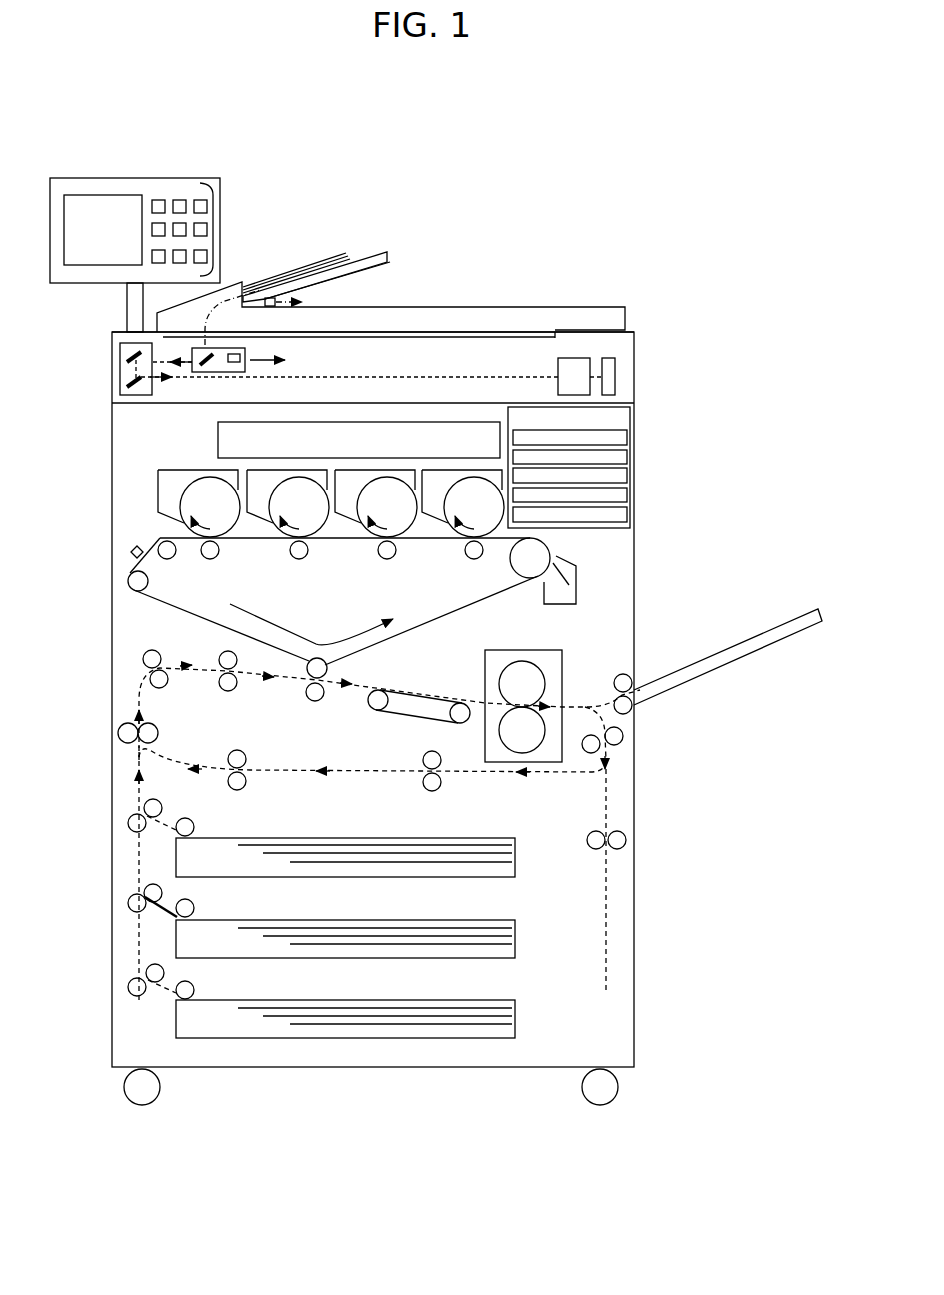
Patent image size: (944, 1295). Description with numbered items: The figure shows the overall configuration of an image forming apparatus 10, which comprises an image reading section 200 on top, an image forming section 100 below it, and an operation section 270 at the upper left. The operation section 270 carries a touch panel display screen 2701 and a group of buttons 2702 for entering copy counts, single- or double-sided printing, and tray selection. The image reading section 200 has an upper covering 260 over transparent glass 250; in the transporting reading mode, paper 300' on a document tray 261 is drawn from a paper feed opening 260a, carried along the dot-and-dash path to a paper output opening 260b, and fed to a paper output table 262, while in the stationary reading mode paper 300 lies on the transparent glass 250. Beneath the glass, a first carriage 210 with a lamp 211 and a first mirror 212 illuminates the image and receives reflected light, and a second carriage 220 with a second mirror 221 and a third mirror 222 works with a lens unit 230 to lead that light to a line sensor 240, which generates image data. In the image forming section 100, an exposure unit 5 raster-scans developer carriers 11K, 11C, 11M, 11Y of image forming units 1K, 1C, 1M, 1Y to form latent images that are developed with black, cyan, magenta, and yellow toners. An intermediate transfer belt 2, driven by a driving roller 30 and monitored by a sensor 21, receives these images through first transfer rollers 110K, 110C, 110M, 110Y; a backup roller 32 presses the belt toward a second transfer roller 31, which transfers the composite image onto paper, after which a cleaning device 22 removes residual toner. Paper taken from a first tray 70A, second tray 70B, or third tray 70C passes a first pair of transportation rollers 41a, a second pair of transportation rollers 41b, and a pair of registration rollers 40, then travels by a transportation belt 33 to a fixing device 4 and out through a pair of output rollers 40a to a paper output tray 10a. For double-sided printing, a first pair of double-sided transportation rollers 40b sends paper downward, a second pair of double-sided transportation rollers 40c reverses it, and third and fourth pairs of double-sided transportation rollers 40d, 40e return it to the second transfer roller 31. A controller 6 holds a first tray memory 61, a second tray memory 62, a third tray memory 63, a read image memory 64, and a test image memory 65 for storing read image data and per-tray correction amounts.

The image forming apparatus 10 is at (345, 158).
The image forming section 100 is at (730, 489).
The image reading section 200 is at (386, 302).
The operation section 270 is at (176, 222).
The touch panel display screen 2701 is at (82, 195).
The group of buttons 2702 is at (213, 230).
The upper covering 260 is at (548, 305).
The paper feed opening 260a is at (258, 285).
The paper output opening 260b is at (300, 298).
The document tray 261 is at (395, 255).
The paper output table 262 is at (508, 316).
The paper 300 is at (488, 262).
The paper 300' is at (397, 223).
The transparent glass 250 is at (540, 342).
The second carriage 220 is at (87, 364).
The second mirror 221 is at (128, 356).
The third mirror 222 is at (128, 383).
The first carriage 210 is at (249, 369).
The lamp 211 is at (240, 363).
The first mirror 212 is at (208, 370).
The lens unit 230 is at (575, 358).
The line sensor 240 is at (608, 358).
The exposure unit 5 is at (218, 442).
The controller 6 is at (594, 463).
The first tray memory 61 is at (627, 438).
The second tray memory 62 is at (627, 457).
The third tray memory 63 is at (627, 476).
The read image memory 64 is at (627, 496).
The test image memory 65 is at (627, 517).
The image forming unit 1K is at (155, 530).
The image forming unit 1C is at (259, 528).
The image forming unit 1M is at (349, 528).
The image forming unit 1Y is at (437, 528).
The developer carrier 11K is at (172, 558).
The first transfer roller 110K is at (208, 560).
The developer carrier 11C is at (284, 545).
The first transfer roller 110C is at (300, 560).
The developer carrier 11M is at (372, 545).
The first transfer roller 110M is at (387, 560).
The developer carrier 11Y is at (460, 545).
The first transfer roller 110Y is at (474, 560).
The intermediate transfer belt 2 is at (503, 595).
The sensor 21 is at (130, 552).
The driving roller 30 is at (547, 552).
The cleaning device 22 is at (602, 577).
The backup roller 32 is at (310, 672).
The second transfer roller 31 is at (312, 701).
The transportation belt 33 is at (422, 690).
The fixing device 4 is at (578, 680).
The pair of registration rollers 40 is at (200, 658).
The first pair of transportation rollers 41a is at (126, 711).
The second pair of transportation rollers 41b is at (135, 673).
The pair of output rollers 40a is at (641, 702).
The first pair of double-sided transportation rollers 40b is at (612, 755).
The second pair of double-sided transportation rollers 40c is at (612, 853).
The third pair of double-sided transportation rollers 40d is at (446, 785).
The fourth pair of double-sided transportation rollers 40e is at (250, 785).
The paper output tray 10a is at (730, 662).
The first tray 70A is at (176, 850).
The second tray 70B is at (176, 934).
The third tray 70C is at (176, 1015).